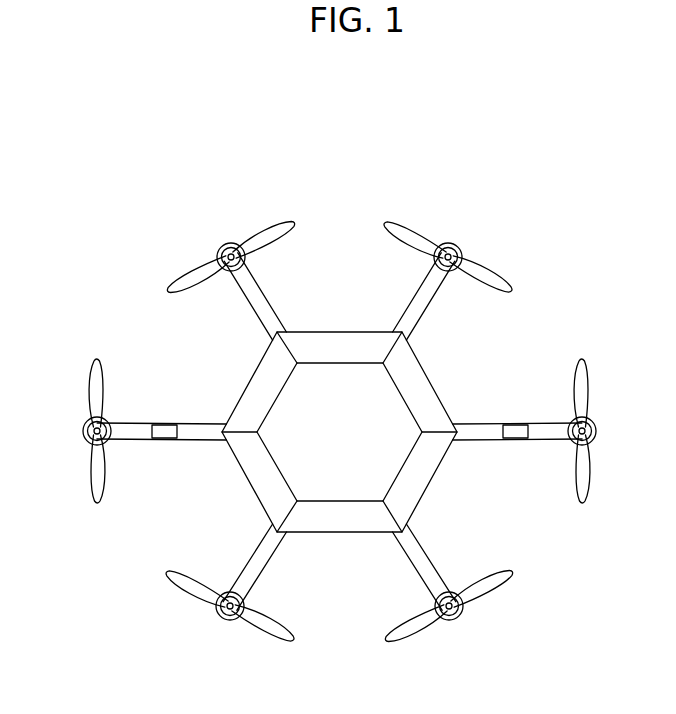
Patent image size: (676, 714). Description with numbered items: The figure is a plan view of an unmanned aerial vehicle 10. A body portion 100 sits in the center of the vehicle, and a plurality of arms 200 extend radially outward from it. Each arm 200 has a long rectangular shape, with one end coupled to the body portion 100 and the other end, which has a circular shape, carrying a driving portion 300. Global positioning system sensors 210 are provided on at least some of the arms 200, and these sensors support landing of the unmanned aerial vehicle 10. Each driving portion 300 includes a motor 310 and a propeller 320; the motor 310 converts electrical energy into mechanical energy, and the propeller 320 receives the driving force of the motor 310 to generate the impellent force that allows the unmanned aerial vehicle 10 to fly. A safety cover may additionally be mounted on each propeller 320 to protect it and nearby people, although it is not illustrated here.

The unmanned aerial vehicle 10 is at (352, 124).
The body portion 100 is at (339, 322).
The arm 200 is at (243, 308).
The global positioning system (GPS) sensor 210 is at (167, 440).
The driving portion 300 is at (340, 433).
The motor 310 is at (597, 433).
The propeller 320 is at (588, 472).